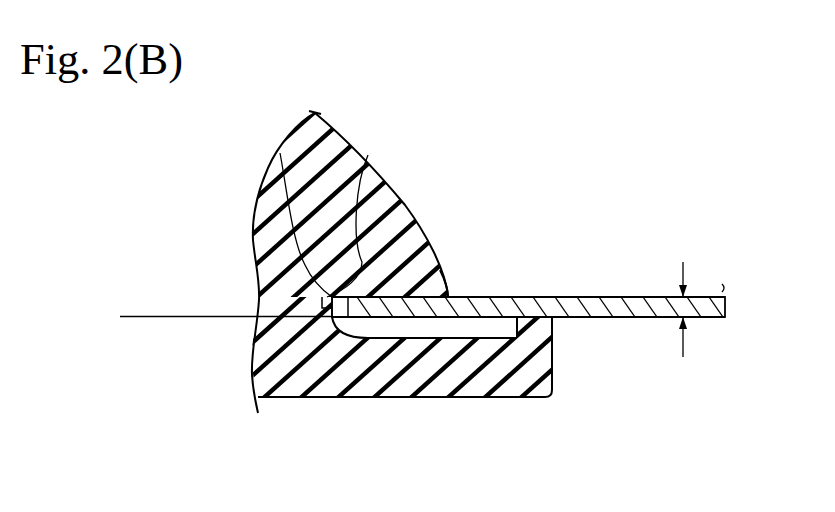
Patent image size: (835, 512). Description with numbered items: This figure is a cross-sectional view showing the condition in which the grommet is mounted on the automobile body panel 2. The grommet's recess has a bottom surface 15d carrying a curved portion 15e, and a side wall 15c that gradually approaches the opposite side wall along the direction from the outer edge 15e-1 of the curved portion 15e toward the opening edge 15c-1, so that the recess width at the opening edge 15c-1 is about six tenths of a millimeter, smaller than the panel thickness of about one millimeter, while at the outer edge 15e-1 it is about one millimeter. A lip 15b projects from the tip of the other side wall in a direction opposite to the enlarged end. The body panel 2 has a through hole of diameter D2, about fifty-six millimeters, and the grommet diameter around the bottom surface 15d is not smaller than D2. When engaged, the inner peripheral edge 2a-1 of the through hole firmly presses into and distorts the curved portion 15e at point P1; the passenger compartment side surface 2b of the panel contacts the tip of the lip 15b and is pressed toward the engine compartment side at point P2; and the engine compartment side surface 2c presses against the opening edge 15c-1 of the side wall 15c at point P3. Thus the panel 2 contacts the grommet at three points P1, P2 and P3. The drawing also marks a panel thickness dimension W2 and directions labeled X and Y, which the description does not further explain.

The curved portion 15e is at (280, 153).
The outer edge of the curved portion 15e-1 is at (369, 161).
The side wall 15c is at (396, 284).
The opening edge 15c-1 is at (450, 290).
The bottom surface 15d is at (335, 321).
The lip 15b is at (535, 397).
The automobile body panel 2 is at (698, 328).
The inner peripheral edge of the through hole 2a-1 is at (322, 314).
The passenger compartment side surface 2b is at (614, 306).
The engine compartment side surface 2c is at (558, 297).
The contact point P1 is at (294, 282).
The contact point P2 is at (546, 342).
The contact point P3 is at (410, 275).
The diameter of the through hole D2 is at (226, 296).
The thickness of plate W2 is at (697, 297).
The direction X is at (689, 178).
The direction Y is at (684, 461).